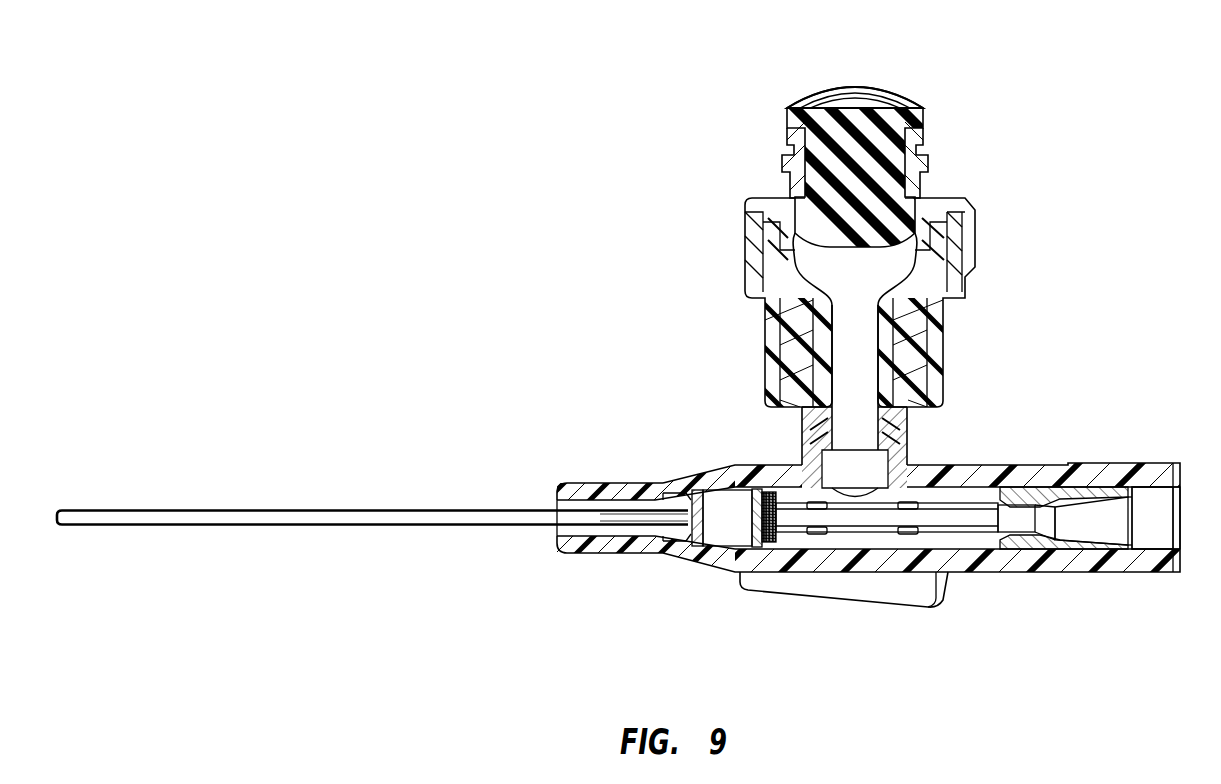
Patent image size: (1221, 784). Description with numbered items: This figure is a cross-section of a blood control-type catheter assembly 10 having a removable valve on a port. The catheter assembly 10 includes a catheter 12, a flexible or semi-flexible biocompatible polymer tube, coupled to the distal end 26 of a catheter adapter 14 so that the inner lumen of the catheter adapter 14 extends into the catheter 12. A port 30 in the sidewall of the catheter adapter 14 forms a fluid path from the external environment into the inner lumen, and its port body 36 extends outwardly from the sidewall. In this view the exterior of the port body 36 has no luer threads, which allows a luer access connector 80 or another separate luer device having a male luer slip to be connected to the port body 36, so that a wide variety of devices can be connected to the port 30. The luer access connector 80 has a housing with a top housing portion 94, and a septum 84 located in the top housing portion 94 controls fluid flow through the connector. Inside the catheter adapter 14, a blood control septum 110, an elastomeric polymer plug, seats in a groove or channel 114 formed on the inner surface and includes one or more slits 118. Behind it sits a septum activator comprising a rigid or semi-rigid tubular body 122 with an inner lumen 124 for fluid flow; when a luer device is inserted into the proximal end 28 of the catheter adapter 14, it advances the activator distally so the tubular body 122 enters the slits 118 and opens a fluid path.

The catheter assembly 10 is at (424, 208).
The catheter 12 is at (273, 530).
The catheter adapter 14 is at (1015, 575).
The distal end 26 is at (572, 556).
The proximal end 28 is at (1176, 462).
The port 30 is at (766, 121).
The port body 36 is at (905, 433).
The luer access connector 80 is at (985, 268).
The septum 84 is at (920, 108).
The top housing portion 94 is at (960, 202).
The blood control septum 110 is at (805, 536).
The groove or channel 114 is at (768, 512).
The slits 118 is at (748, 518).
The tubular body 122 is at (898, 536).
The inner lumen 124 is at (1112, 520).